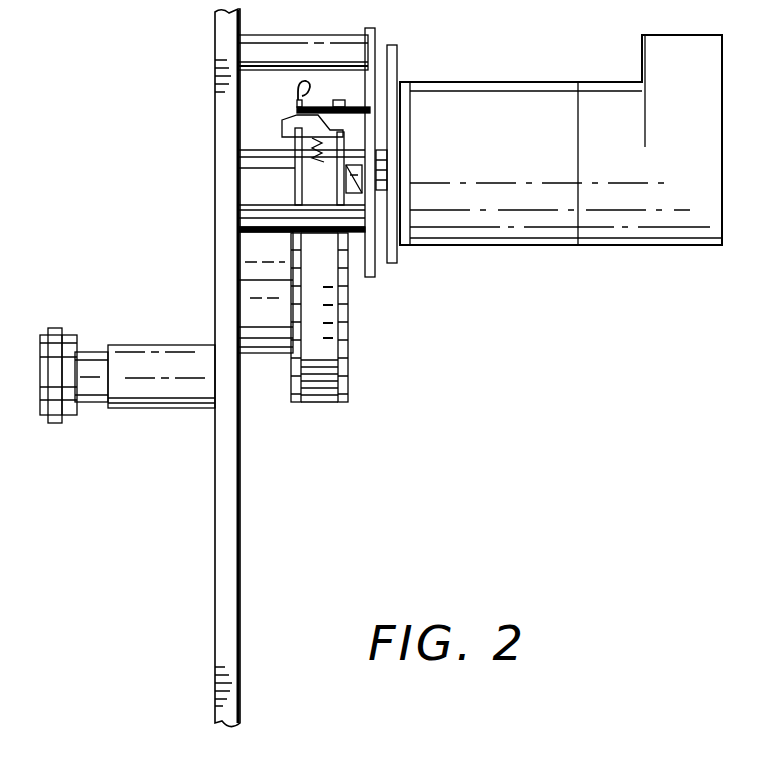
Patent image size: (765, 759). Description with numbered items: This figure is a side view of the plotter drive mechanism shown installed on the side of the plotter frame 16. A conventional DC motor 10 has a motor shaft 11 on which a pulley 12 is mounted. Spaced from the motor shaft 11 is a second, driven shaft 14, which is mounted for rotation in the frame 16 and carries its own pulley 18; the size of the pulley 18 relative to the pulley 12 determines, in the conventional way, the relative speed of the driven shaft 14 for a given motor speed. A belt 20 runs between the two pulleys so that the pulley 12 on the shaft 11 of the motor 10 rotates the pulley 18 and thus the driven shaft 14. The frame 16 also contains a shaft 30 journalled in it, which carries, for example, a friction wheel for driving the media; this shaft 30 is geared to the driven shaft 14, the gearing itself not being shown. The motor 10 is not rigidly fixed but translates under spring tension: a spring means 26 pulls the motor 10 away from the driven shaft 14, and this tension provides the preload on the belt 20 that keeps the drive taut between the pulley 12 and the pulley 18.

The DC motor 10 is at (522, 153).
The motor shaft 11 is at (250, 149).
The pulley 12 is at (290, 85).
The second shaft 14 is at (270, 358).
The plotter frame 16 is at (239, 616).
The pulley 18 is at (348, 381).
The belt 20 is at (322, 396).
The spring means 26 is at (340, 160).
The shaft 30 is at (158, 410).